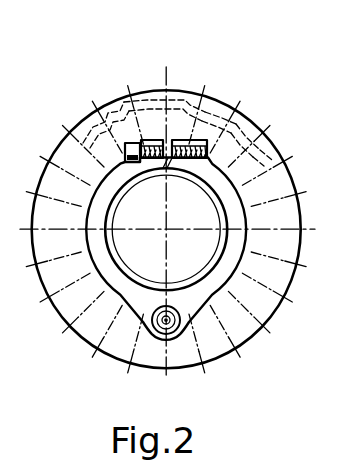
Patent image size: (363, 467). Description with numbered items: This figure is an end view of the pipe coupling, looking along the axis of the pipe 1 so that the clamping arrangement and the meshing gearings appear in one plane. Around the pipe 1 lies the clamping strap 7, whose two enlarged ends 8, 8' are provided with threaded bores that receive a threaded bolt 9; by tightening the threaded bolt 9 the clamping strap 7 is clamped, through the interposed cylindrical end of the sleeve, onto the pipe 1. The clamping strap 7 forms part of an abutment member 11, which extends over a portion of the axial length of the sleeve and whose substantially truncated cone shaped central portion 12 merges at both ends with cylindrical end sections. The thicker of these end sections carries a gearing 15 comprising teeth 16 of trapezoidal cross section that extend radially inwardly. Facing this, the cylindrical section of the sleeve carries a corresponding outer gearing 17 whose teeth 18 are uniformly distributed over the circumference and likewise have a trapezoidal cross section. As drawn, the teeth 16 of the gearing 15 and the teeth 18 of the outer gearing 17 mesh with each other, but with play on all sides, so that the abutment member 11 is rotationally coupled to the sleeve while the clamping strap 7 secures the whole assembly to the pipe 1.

The pipe 1 is at (118, 263).
The clamping strap 7 is at (227, 275).
The enlarged end 8 is at (189, 104).
The enlarged end 8' is at (150, 105).
The threaded bolt 9 is at (129, 145).
The abutment member 11 is at (250, 346).
The truncated cone shaped central portion 12 is at (64, 138).
The gearing 15 is at (217, 120).
The teeth 16 is at (246, 138).
The outer gearing 17 is at (270, 163).
The teeth 18 is at (274, 168).